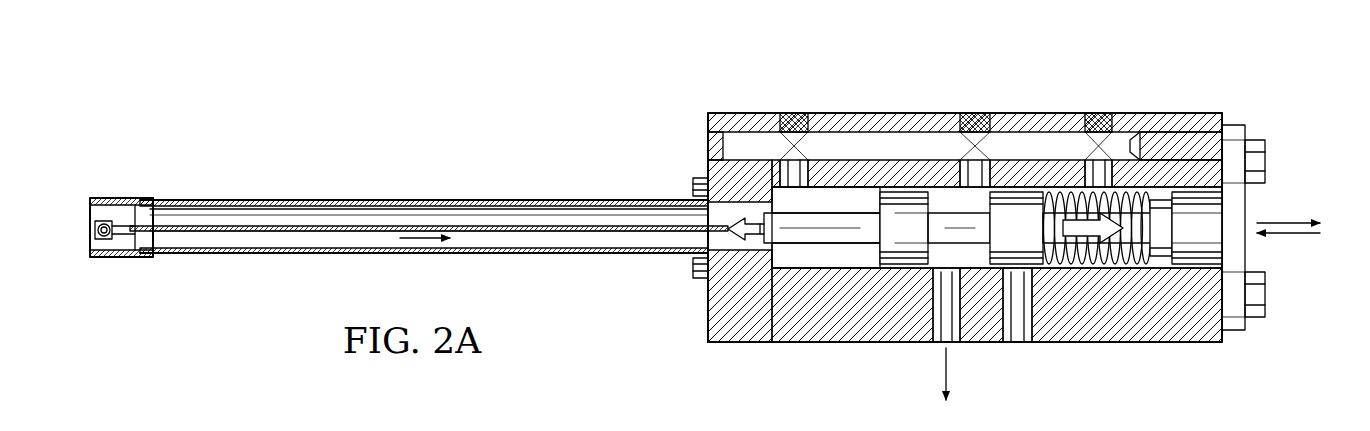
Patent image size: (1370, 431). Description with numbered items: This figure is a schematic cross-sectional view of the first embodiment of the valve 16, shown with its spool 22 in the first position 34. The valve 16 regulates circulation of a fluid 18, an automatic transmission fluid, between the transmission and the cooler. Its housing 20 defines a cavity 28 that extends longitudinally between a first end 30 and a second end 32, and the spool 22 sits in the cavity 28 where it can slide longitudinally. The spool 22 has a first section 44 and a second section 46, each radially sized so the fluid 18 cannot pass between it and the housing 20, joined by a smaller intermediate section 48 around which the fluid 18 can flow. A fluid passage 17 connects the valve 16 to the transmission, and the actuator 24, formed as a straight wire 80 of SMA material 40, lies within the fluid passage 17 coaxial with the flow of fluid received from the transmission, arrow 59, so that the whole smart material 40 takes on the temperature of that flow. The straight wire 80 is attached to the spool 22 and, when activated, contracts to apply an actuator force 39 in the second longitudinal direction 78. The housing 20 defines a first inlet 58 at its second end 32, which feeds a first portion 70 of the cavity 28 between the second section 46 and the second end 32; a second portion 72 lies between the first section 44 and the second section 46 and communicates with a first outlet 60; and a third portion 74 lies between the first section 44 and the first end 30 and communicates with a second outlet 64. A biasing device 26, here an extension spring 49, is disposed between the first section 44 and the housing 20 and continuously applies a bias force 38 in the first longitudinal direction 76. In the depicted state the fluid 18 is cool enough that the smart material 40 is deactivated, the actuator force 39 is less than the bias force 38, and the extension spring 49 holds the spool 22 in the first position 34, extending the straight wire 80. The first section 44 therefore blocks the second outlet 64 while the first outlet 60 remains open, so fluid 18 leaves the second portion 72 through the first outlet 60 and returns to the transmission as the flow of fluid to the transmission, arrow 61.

The valve 16 is at (847, 53).
The fluid passage 17 is at (250, 242).
The fluid 18 is at (352, 242).
The housing 20 is at (1185, 143).
The spool 22 is at (975, 187).
The actuator 24 is at (315, 227).
The biasing device 26 is at (1145, 250).
The cavity 28 is at (860, 262).
The first end 30 is at (1233, 205).
The second end 32 is at (770, 198).
The first position 34 is at (877, 91).
The bias force 38 is at (1082, 187).
The actuator force 39 is at (738, 242).
The SMA material 40 is at (405, 228).
The first section 44 is at (1015, 213).
The second section 46 is at (912, 213).
The intermediate section 48 is at (951, 213).
The extension spring 49 is at (1115, 262).
The first inlet 58 is at (742, 214).
The flow of fluid received from the transmission 59 is at (420, 240).
The first outlet 60 is at (942, 330).
The flow of fluid to the transmission 61 is at (948, 375).
The second outlet 64 is at (1020, 310).
The first portion 70 is at (847, 200).
The second portion 72 is at (965, 260).
The third portion 74 is at (1135, 192).
The first longitudinal direction 76 is at (1262, 221).
The second longitudinal direction 78 is at (1278, 236).
The straight wire 80 is at (520, 227).